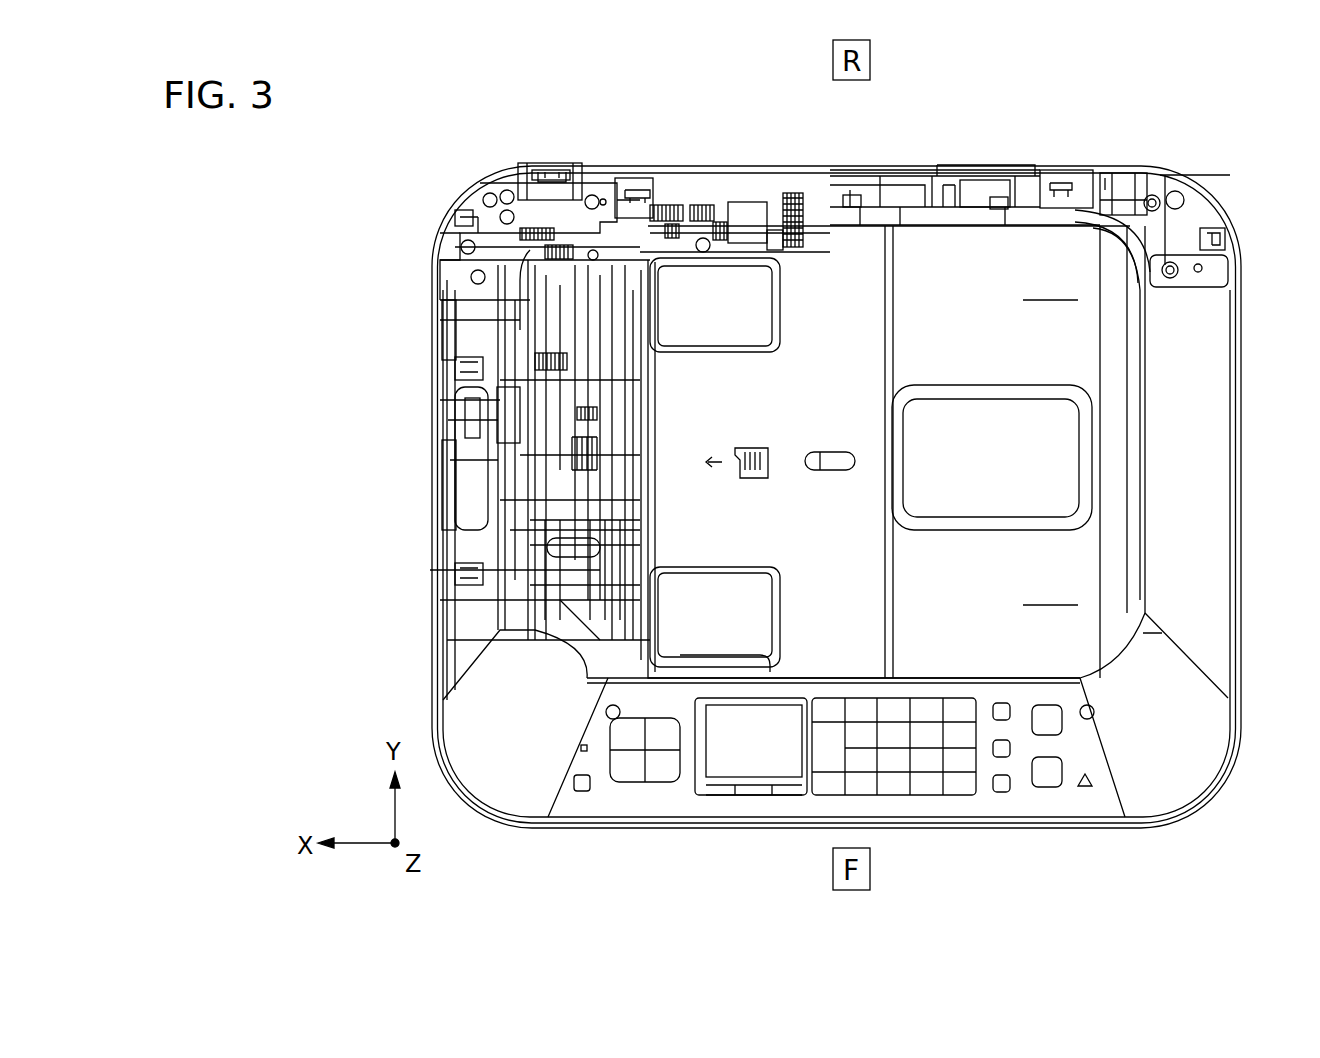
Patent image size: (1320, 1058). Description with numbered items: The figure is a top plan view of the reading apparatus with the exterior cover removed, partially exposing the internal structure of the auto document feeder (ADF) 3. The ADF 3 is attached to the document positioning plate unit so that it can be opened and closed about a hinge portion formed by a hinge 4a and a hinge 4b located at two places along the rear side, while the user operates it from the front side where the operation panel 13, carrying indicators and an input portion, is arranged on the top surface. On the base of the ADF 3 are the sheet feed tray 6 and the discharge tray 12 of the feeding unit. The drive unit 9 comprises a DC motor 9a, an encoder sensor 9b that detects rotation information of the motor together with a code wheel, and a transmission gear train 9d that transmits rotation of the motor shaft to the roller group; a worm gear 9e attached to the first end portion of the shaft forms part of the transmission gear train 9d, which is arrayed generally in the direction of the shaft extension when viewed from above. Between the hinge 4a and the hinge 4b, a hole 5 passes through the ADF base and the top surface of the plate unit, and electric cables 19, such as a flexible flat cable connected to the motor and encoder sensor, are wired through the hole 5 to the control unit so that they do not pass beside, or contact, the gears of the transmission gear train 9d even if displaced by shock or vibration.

The auto document feeder 3 is at (385, 236).
The hinge 4a is at (1125, 190).
The hinge 4b is at (552, 163).
The hole 5 is at (970, 197).
The sheet feed tray 6 is at (862, 493).
The drive unit 9 is at (855, 108).
The motor 9a is at (755, 203).
The encoder sensor 9b is at (800, 195).
The transmission gear train 9d is at (672, 205).
The worm gear 9e is at (718, 205).
The discharge tray 12 is at (1033, 558).
The operation panel 13 is at (642, 797).
The electric cables 19 is at (945, 190).